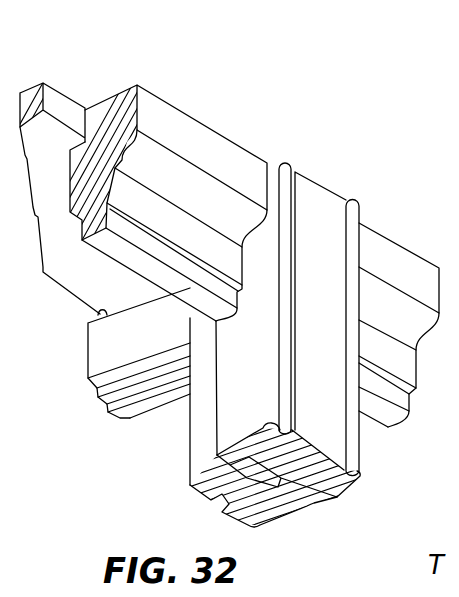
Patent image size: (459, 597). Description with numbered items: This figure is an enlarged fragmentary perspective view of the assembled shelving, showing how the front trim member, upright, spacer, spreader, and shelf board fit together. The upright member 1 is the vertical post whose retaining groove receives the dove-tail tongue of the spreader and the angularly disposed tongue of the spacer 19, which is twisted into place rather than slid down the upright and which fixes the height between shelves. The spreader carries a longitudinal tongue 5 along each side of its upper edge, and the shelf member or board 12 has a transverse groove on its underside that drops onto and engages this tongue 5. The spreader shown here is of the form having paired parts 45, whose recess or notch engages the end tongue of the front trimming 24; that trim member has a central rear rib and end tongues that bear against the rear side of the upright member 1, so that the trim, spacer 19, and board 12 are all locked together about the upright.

The upright member 1 is at (315, 208).
The longitudinal tongue 5 is at (90, 177).
The shelf member or board 12 is at (83, 268).
The spacer 19 is at (207, 455).
The front trimming 24 is at (187, 132).
The paired parts 45 is at (115, 344).